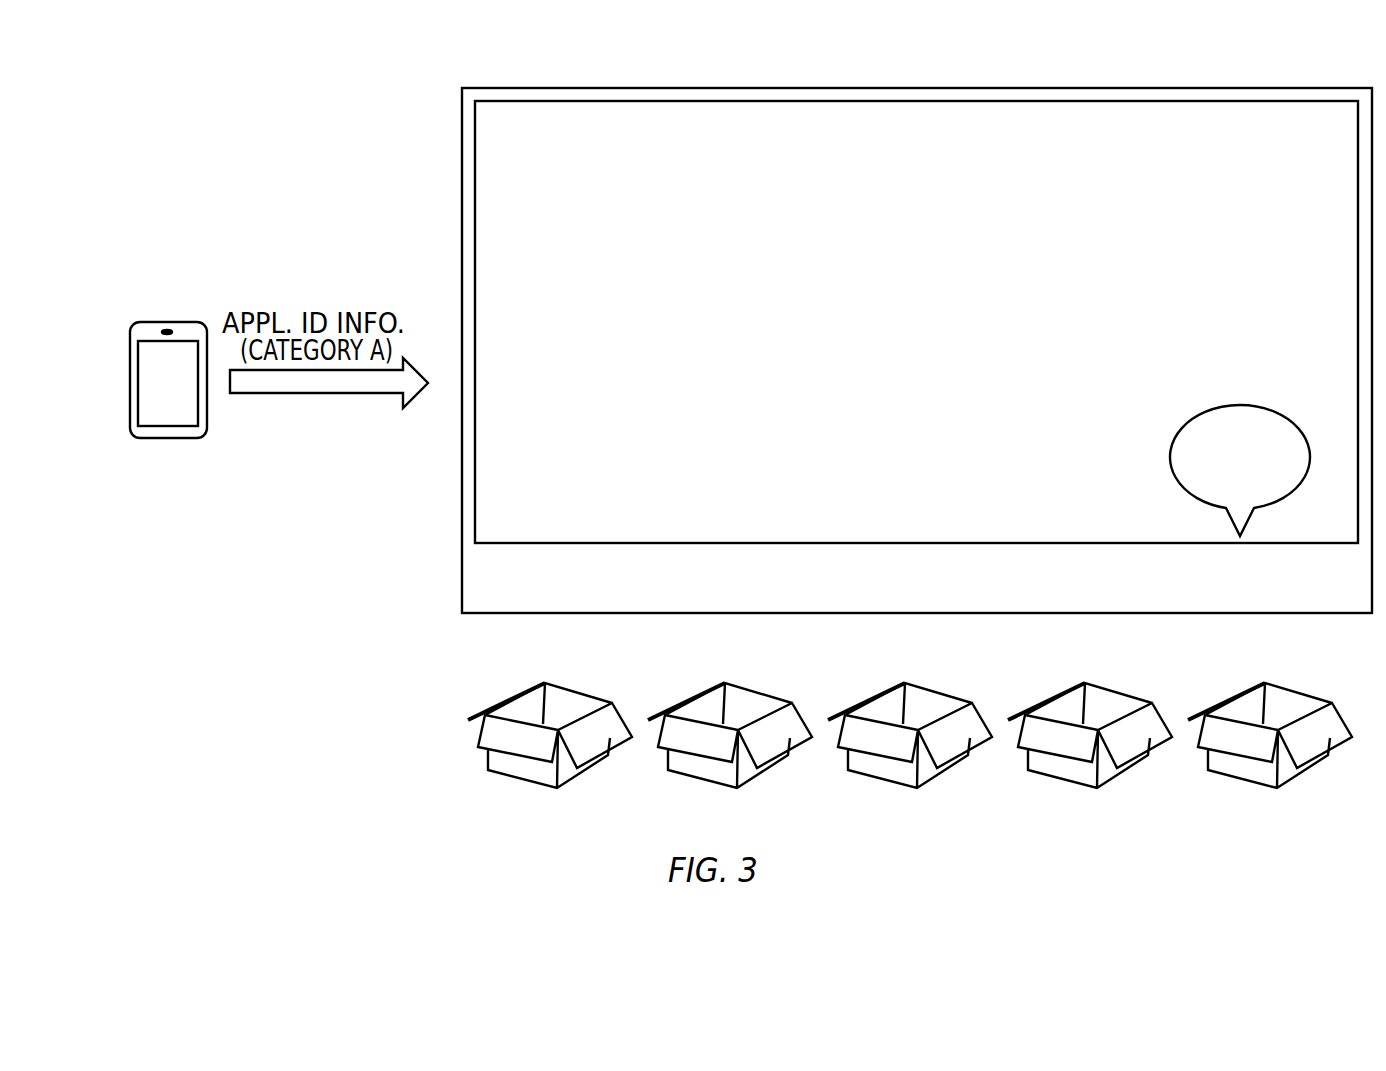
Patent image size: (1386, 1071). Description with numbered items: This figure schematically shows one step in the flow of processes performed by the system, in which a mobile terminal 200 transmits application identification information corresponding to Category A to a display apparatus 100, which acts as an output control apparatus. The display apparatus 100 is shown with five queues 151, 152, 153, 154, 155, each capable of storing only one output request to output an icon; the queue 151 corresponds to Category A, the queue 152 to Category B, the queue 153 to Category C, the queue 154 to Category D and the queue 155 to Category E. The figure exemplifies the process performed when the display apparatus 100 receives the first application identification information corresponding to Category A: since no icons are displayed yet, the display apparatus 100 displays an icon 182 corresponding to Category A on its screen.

The display apparatus 100 is at (1339, 72).
The mobile terminal 200 is at (130, 362).
The icon 182 is at (1283, 394).
The queue 151 is at (578, 675).
The queue 152 is at (730, 749).
The queue 153 is at (910, 749).
The queue 154 is at (1090, 749).
The queue 155 is at (1270, 749).